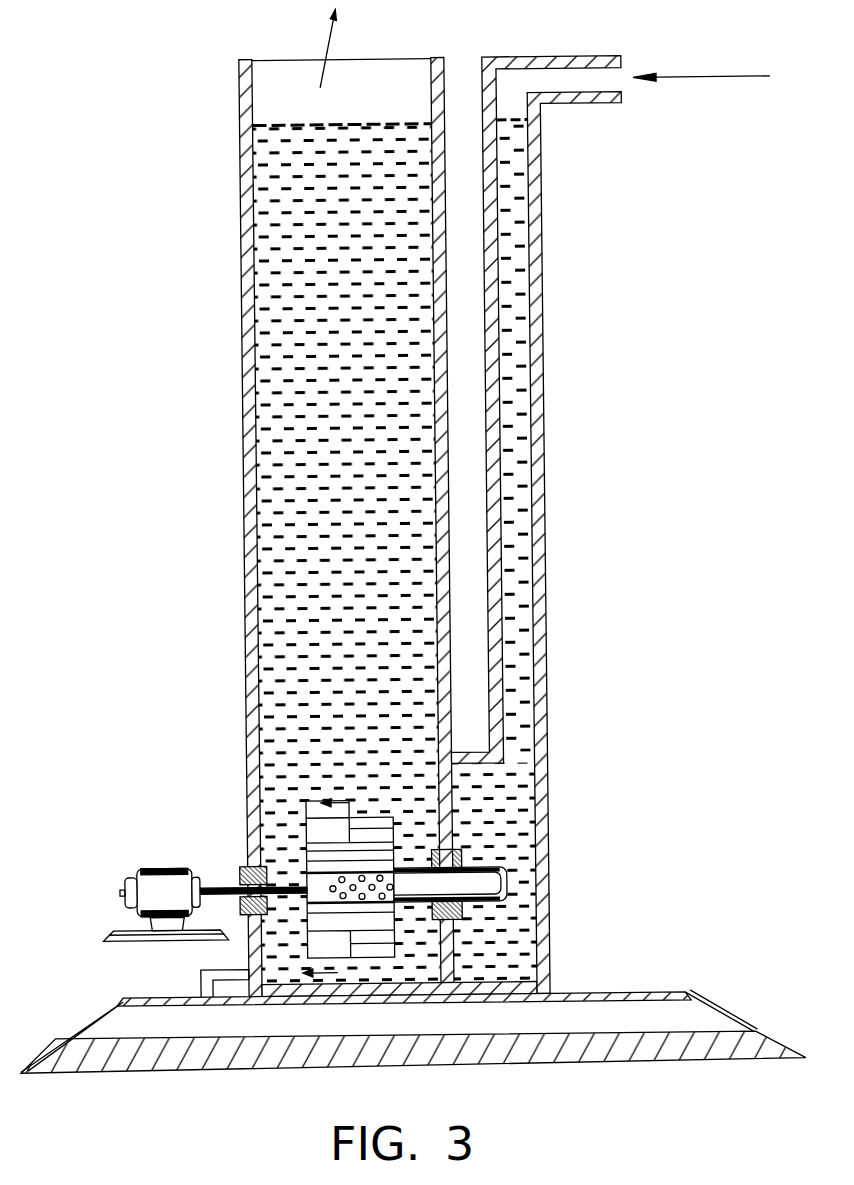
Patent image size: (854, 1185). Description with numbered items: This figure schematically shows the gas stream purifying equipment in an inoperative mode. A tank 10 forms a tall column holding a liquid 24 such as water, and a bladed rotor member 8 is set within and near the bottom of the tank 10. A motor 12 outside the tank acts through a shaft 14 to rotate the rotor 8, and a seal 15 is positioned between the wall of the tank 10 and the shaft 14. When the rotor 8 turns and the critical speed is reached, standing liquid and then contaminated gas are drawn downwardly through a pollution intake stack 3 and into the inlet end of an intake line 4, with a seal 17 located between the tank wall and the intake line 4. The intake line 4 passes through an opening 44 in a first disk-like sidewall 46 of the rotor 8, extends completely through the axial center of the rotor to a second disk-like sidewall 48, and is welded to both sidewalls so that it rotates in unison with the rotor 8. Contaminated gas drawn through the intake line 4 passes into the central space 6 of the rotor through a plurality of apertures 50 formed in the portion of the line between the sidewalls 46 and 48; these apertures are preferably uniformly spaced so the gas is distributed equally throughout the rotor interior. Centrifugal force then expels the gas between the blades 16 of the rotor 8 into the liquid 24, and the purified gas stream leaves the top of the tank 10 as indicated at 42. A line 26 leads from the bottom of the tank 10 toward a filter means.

The pollution intake stack 3 is at (546, 518).
The intake line 4 is at (486, 874).
The central space 6 is at (309, 907).
The bladed rotor member 8 is at (294, 833).
The tank 10 is at (238, 505).
The motor 12 is at (153, 861).
The shaft 14 is at (207, 882).
The seal 15 is at (240, 863).
The blades 16 is at (320, 800).
The seal 17 is at (456, 862).
The liquid 24 is at (272, 211).
The line 26 is at (193, 971).
The purified gas stream 42 is at (337, 38).
The opening 44 is at (453, 852).
The first disk-like sidewall 46 is at (453, 913).
The second disk-like sidewall 48 is at (301, 856).
The apertures 50 is at (342, 876).